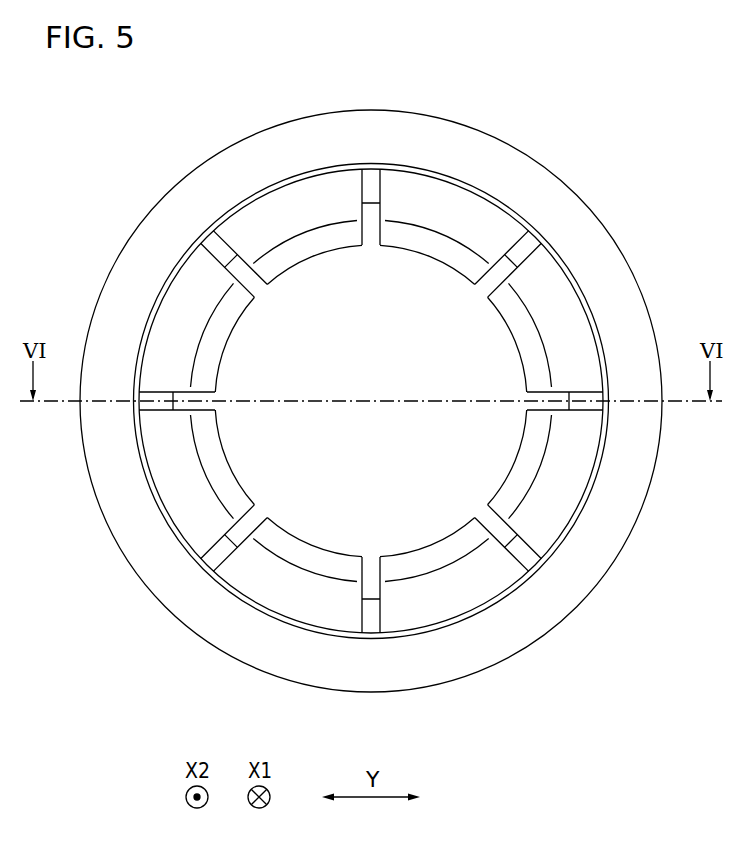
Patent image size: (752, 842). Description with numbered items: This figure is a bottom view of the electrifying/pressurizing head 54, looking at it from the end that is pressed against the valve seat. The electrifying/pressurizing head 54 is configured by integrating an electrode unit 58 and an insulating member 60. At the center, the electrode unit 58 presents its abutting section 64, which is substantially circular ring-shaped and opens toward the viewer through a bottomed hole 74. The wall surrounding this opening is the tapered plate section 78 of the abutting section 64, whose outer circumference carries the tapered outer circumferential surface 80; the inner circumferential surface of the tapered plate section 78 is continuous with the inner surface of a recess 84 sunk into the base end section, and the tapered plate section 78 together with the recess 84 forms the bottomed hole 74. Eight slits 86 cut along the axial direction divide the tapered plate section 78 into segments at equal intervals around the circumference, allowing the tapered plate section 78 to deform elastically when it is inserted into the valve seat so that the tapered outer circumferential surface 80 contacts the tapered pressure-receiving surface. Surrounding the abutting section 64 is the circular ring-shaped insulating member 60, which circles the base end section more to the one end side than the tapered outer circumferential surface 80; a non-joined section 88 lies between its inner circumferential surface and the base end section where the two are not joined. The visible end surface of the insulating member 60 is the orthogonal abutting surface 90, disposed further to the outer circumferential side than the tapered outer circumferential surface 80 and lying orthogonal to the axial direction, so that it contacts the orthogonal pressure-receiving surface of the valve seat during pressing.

The electrifying/pressurizing head 54 is at (629, 62).
The electrode unit 58 is at (443, 183).
The insulating member 60 is at (523, 158).
The abutting section 64 is at (586, 254).
The bottomed hole 74 is at (435, 515).
The tapered plate section 78 is at (223, 483).
The tapered outer circumferential surface 80 is at (313, 195).
The recess 84 is at (320, 508).
The slits 86 is at (378, 186).
The non-joined section 88 is at (590, 498).
The orthogonal abutting surface 90 is at (595, 556).